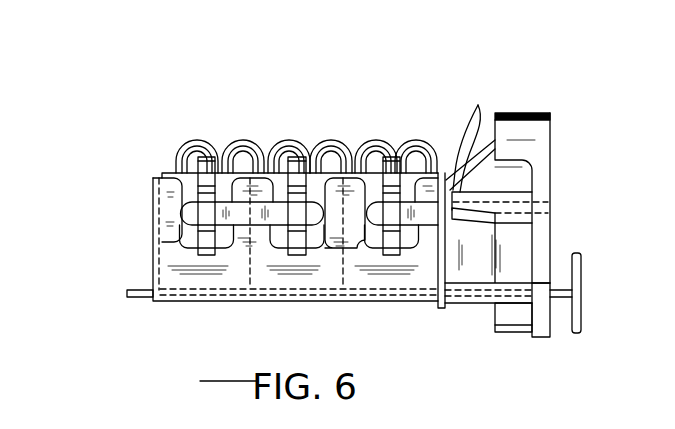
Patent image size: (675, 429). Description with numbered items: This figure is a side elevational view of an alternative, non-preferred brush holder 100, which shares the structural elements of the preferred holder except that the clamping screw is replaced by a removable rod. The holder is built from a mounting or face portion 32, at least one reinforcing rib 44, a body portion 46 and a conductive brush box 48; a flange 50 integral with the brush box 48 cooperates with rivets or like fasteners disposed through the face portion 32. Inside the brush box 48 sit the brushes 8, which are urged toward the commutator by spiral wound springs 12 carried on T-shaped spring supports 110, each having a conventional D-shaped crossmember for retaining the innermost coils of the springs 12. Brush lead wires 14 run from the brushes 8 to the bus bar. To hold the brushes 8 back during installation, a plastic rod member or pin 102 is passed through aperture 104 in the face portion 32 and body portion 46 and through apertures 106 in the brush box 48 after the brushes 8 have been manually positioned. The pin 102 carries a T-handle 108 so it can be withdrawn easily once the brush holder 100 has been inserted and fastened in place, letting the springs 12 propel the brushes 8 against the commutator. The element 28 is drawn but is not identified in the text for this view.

The brushes 8 is at (193, 284).
The spiral wound springs 12 is at (210, 155).
The brush lead wires 14 is at (208, 150).
The bracket 28 is at (533, 207).
The face portion 32 is at (553, 117).
The reinforcing rib 44 is at (478, 108).
The body portion 46 is at (500, 270).
The conductive brush box 48 is at (148, 195).
The flange 50 is at (442, 272).
The brush holder 100 is at (425, 108).
The pin 102 is at (137, 300).
The aperture 104 is at (537, 285).
The apertures 106 is at (150, 292).
The T-handle 108 is at (585, 319).
The T-shaped spring supports 110 is at (188, 213).